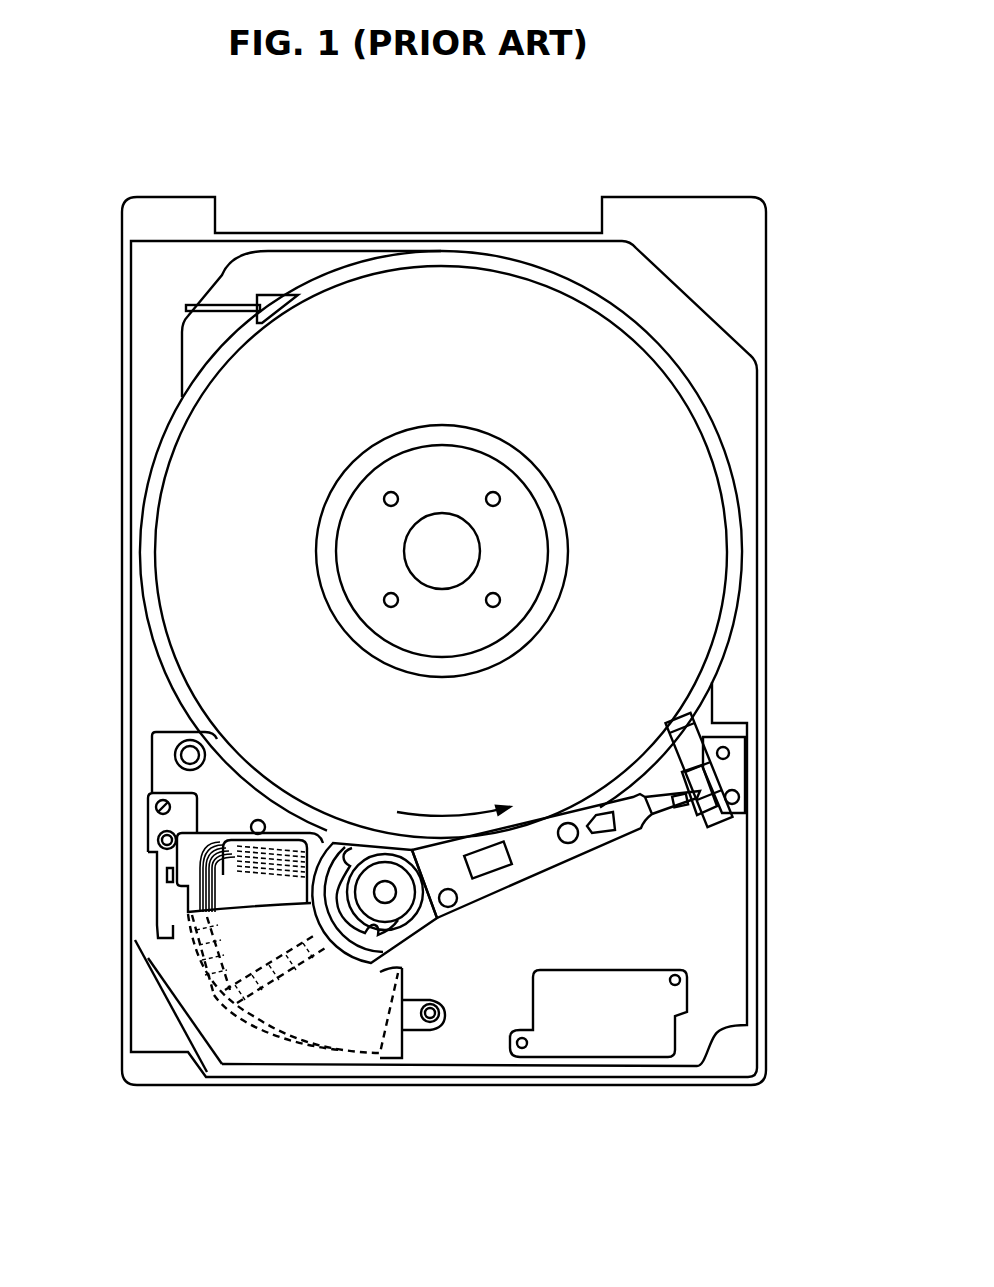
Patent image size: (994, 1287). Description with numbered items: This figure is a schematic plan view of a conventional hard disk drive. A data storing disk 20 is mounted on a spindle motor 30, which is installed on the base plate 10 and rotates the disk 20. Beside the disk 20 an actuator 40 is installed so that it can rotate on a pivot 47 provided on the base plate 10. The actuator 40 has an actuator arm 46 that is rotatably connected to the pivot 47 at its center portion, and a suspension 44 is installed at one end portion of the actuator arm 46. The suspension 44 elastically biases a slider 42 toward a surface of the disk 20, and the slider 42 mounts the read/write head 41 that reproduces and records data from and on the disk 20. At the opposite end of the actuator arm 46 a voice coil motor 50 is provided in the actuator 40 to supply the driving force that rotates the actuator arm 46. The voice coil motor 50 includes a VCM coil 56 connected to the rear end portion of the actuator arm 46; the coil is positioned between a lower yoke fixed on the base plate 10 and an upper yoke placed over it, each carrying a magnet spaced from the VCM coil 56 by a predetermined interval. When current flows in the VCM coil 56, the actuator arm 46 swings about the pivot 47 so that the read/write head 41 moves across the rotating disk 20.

The base plate 10 is at (140, 640).
The data storing disk 20 is at (747, 512).
The spindle motor 30 is at (471, 473).
The actuator 40 is at (507, 898).
The read/write head 41 is at (705, 797).
The slider 42 is at (678, 805).
The suspension 44 is at (653, 812).
The actuator arm 46 is at (500, 877).
The pivot 47 is at (392, 897).
The voice coil motor 50 is at (413, 1055).
The VCM coil 56 is at (243, 1000).